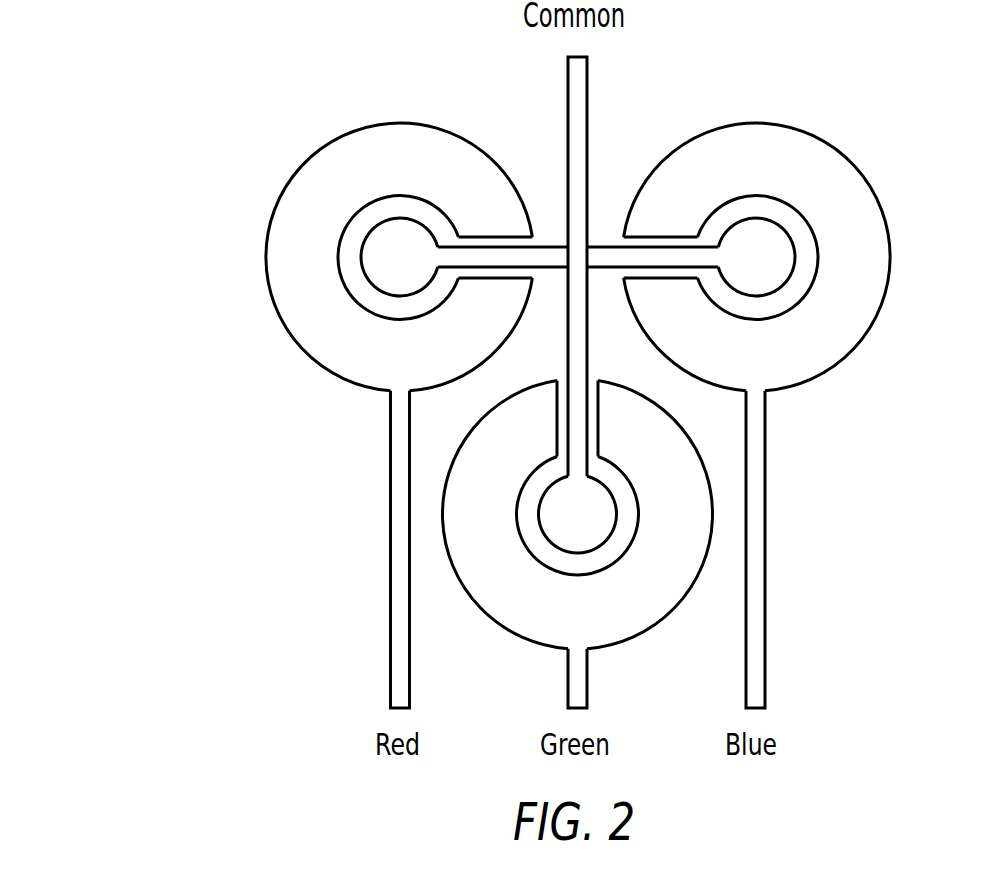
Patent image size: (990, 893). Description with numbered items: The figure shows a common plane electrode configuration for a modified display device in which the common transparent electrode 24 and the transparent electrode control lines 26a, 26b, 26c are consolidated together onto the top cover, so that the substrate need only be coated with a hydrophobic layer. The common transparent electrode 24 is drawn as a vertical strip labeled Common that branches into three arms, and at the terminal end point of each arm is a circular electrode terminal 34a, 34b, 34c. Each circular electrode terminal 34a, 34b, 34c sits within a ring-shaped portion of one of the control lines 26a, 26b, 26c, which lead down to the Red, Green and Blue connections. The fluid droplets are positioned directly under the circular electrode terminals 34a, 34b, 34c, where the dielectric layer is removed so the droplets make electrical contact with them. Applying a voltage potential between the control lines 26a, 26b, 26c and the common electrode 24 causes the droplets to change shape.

The common transparent electrode 24 is at (580, 91).
The transparent electrode control line 26a is at (285, 328).
The transparent electrode control line 26b is at (665, 615).
The transparent electrode control line 26c is at (875, 192).
The circular electrode terminal 34a is at (390, 217).
The circular electrode terminal 34b is at (543, 535).
The circular electrode terminal 34c is at (793, 257).